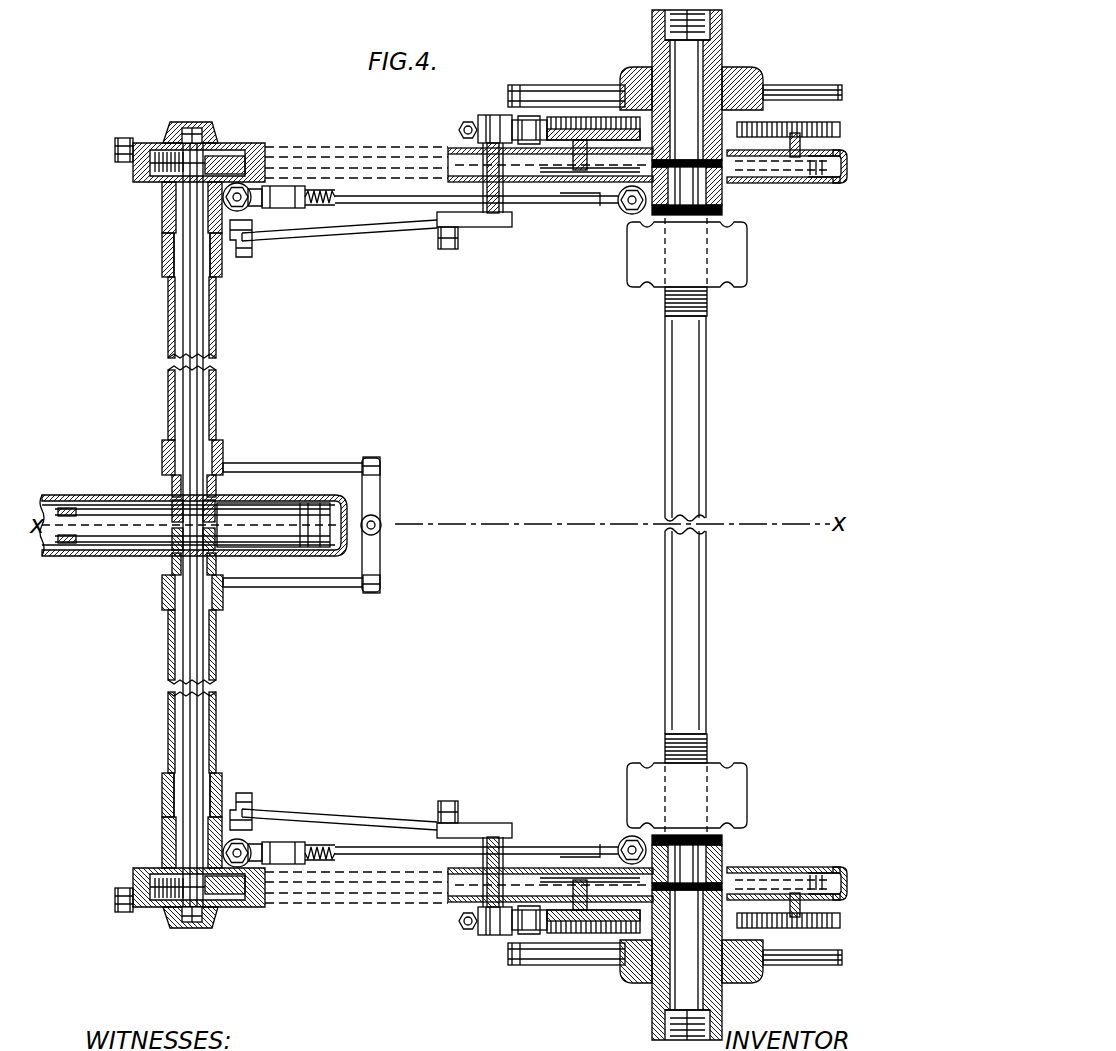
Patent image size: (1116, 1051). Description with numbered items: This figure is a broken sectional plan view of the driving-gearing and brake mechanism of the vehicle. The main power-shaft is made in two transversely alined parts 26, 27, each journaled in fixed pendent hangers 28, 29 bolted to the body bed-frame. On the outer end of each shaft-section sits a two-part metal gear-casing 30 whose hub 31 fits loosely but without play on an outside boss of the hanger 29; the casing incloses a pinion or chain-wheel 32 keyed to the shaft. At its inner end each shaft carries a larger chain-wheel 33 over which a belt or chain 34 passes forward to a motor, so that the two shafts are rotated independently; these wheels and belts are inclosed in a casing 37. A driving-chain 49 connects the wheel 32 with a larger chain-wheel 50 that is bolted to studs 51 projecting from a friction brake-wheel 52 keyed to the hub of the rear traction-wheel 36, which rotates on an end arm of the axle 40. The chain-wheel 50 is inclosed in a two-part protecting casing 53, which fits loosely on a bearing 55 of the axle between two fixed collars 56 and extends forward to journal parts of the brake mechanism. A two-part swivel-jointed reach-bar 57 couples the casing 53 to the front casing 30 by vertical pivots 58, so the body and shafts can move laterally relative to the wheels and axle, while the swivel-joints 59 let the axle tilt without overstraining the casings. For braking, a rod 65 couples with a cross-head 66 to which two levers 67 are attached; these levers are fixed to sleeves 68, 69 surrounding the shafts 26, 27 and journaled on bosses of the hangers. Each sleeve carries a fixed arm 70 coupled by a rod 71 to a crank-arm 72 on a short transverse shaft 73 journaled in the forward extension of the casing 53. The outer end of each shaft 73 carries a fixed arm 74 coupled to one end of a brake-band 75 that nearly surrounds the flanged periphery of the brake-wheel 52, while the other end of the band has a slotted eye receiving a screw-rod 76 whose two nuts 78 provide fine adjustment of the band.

The driving-shaft section 26 is at (203, 350).
The driving-shaft section 27 is at (183, 677).
The pendent hanger 28 is at (170, 482).
The pendent hanger 29 is at (172, 234).
The gear-casing 30 is at (138, 527).
The hub 31 is at (162, 196).
The chain-wheel 32 is at (226, 148).
The chain-wheel 33 is at (100, 508).
The driving-belt 34 is at (58, 495).
The traction-wheel 36 is at (735, 76).
The casing 37 is at (290, 503).
The traction-wheel axle 40 is at (703, 372).
The driving-chain 49 is at (372, 150).
The chain-wheel 50 is at (830, 186).
The stud 51 is at (595, 118).
The brake-wheel 52 is at (785, 122).
The gear-casing 53 is at (790, 184).
The bearing 55 is at (692, 215).
The fixed collar 56 is at (722, 205).
The reach-bar 57 is at (405, 203).
The vertical pivot 58 is at (245, 190).
The swivel-joint 59 is at (322, 525).
The rod 65 is at (378, 531).
The cross-head 66 is at (380, 501).
The lever 67 is at (310, 463).
The sleeve 68 is at (168, 352).
The sleeve 69 is at (216, 678).
The fixed arm 70 is at (248, 257).
The rod 71 is at (352, 240).
The crank-arm 72 is at (468, 230).
The transverse shaft 73 is at (505, 208).
The fixed arm 74 is at (492, 122).
The brake-band 75 is at (545, 108).
The screw-rod 76 is at (461, 128).
The nut 78 is at (461, 925).